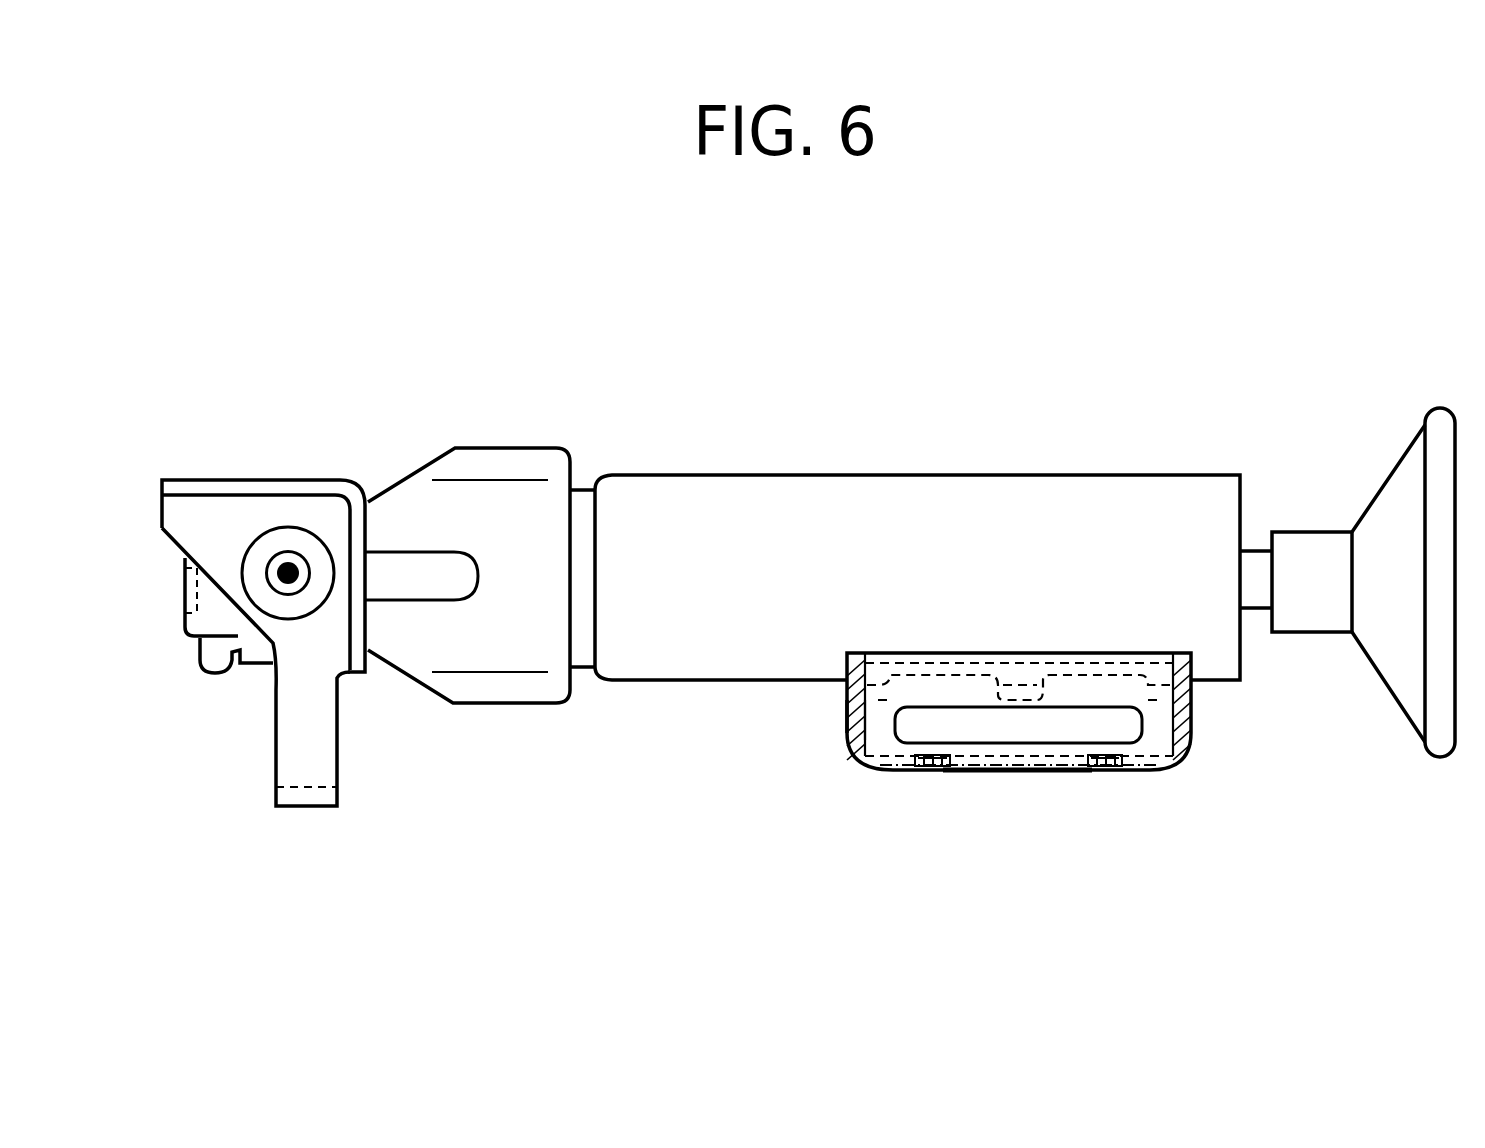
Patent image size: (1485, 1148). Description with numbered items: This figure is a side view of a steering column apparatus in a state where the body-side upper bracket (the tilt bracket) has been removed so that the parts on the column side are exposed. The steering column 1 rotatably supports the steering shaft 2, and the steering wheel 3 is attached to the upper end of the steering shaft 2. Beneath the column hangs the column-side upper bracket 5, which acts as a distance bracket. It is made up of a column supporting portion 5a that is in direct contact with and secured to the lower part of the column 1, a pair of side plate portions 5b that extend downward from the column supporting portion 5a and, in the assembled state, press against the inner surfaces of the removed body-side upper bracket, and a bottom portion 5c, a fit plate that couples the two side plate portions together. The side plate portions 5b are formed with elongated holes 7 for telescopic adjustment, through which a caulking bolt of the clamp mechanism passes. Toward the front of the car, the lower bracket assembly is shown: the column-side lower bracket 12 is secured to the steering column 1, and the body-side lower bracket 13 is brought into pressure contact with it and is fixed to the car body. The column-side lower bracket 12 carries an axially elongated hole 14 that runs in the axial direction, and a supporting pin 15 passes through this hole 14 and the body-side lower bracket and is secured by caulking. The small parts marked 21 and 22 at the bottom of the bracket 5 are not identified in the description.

The steering column 1 is at (1142, 474).
The steering shaft 2 is at (1248, 550).
The steering wheel 3 is at (1392, 473).
The column-side upper bracket 5 is at (1018, 645).
The column supporting portion 5a is at (847, 712).
The side plate portion 5b is at (987, 767).
The bottom portion 5c is at (880, 727).
The elongated hole for telescopic adjustment 7 is at (1046, 736).
The column-side lower bracket 12 is at (402, 480).
The body-side lower bracket 13 is at (238, 480).
The axially elongated hole 14 is at (430, 600).
The supporting pin 15 is at (287, 573).
The terminal 21 is at (926, 772).
The contact 22 is at (932, 772).